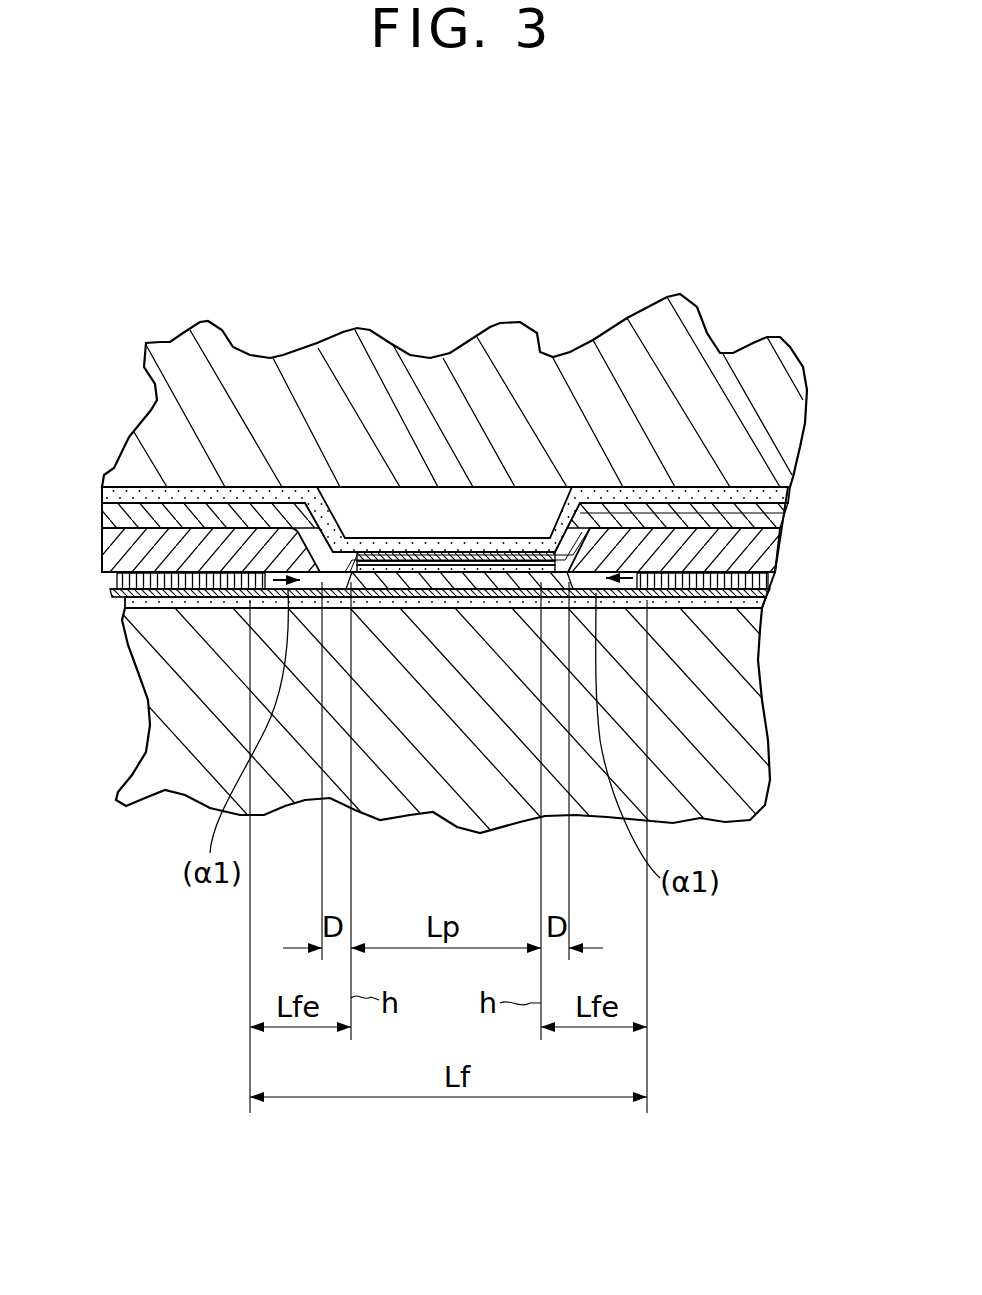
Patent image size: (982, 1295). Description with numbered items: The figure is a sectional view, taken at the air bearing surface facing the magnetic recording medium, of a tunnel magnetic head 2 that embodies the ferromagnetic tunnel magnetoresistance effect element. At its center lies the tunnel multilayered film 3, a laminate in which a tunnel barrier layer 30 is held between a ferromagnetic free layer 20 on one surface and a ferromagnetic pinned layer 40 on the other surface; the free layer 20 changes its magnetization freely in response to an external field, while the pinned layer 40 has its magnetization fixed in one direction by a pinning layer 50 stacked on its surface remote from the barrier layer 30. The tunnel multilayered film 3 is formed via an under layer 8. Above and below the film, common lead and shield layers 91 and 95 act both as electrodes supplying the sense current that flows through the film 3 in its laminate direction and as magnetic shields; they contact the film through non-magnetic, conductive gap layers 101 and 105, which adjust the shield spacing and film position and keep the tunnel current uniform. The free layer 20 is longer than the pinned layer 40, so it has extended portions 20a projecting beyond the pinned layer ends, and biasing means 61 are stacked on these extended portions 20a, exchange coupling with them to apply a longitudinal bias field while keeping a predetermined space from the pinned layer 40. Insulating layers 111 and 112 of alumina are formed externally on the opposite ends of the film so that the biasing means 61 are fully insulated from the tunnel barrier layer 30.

The tunnel magnetic head 2 is at (668, 246).
The tunnel multilayered film 3 is at (840, 478).
The under layer 8 is at (766, 597).
The ferromagnetic free layer 20 is at (640, 580).
The extended portion 20a is at (268, 583).
The tunnel barrier layer 30 is at (575, 568).
The ferromagnetic pinned layer 40 is at (567, 563).
The pinning layer 50 is at (556, 556).
The biasing means 61 is at (125, 551).
The common lead and shield layer 91 is at (155, 705).
The common lead and shield layer 95 is at (148, 441).
The gap layer 101 is at (127, 601).
The gap layer 105 is at (104, 495).
The insulating layer 111 is at (117, 579).
The insulating layer 112 is at (117, 515).